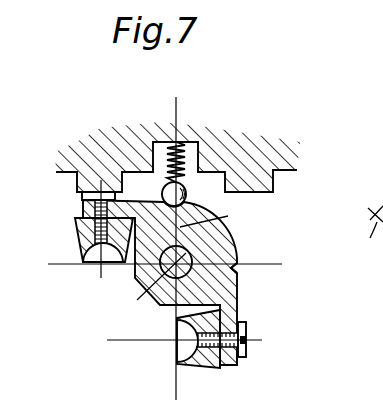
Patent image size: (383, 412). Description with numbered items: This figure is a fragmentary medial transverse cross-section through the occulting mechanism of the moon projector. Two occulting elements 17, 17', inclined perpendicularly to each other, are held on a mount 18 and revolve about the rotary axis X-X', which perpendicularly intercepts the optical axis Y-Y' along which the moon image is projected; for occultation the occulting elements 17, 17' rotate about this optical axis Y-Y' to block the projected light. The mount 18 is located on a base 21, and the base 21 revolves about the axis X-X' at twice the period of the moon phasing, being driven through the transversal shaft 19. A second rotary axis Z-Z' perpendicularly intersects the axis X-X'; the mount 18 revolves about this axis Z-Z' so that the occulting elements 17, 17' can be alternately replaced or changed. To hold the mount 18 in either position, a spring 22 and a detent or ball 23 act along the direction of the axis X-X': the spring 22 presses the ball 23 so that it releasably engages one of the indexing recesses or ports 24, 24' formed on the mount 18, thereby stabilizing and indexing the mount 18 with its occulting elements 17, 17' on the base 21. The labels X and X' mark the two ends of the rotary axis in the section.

The occulting element 17 is at (211, 361).
The occulting element 17' is at (88, 242).
The mount 18 is at (247, 245).
The transversal shaft 19 is at (165, 293).
The base 21 is at (271, 177).
The spring 22 is at (183, 143).
The detent or ball 23 is at (163, 193).
The indexing recess 24 is at (259, 284).
The indexing recess 24' is at (228, 216).
The rotary axis X-X' X is at (183, 168).
The rotary axis X- X' is at (179, 338).
The optical axis Y-Y' is at (184, 368).
The rotary axis Z-Z' is at (148, 283).